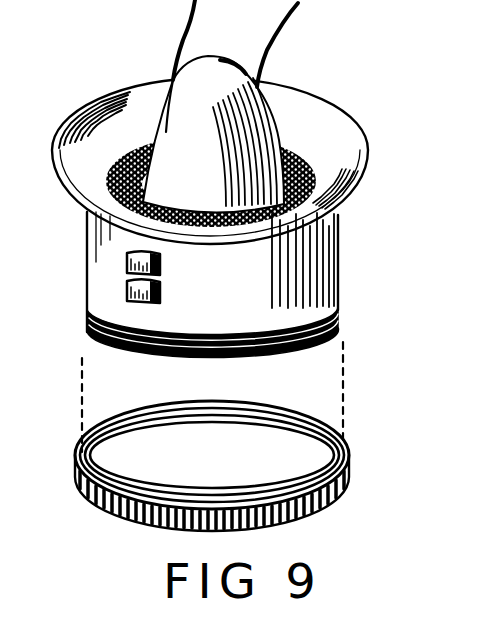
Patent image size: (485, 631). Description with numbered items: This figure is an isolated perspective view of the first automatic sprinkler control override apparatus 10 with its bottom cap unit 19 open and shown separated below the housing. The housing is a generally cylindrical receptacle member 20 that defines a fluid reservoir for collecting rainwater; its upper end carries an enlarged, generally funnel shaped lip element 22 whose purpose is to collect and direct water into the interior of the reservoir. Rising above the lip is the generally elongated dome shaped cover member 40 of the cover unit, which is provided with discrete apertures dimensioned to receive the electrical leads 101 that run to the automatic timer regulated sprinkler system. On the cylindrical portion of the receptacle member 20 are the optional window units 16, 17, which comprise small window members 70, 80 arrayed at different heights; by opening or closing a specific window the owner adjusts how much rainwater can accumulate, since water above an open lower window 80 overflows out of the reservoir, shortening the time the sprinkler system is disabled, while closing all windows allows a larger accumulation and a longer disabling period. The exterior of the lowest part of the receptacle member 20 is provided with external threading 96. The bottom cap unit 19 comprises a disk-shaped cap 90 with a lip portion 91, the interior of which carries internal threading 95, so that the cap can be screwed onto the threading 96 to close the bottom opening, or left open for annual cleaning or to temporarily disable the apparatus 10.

The automatic sprinkler control override apparatus 10 is at (330, 84).
The funnel shaped lip element 22 is at (348, 148).
The dome shaped cover member 40 is at (191, 161).
The electrical leads 101 is at (277, 32).
The receptacle member 20 is at (246, 313).
The external threading 96 is at (97, 331).
The window member 70 is at (162, 262).
The lower window member 80 is at (162, 292).
The window unit 16 is at (112, 267).
The window unit 17 is at (112, 297).
The disk-shaped cap 90 is at (207, 492).
The internal threading 95 is at (101, 440).
The bottom cap unit 19 is at (63, 484).
The lip portion 91 is at (340, 496).